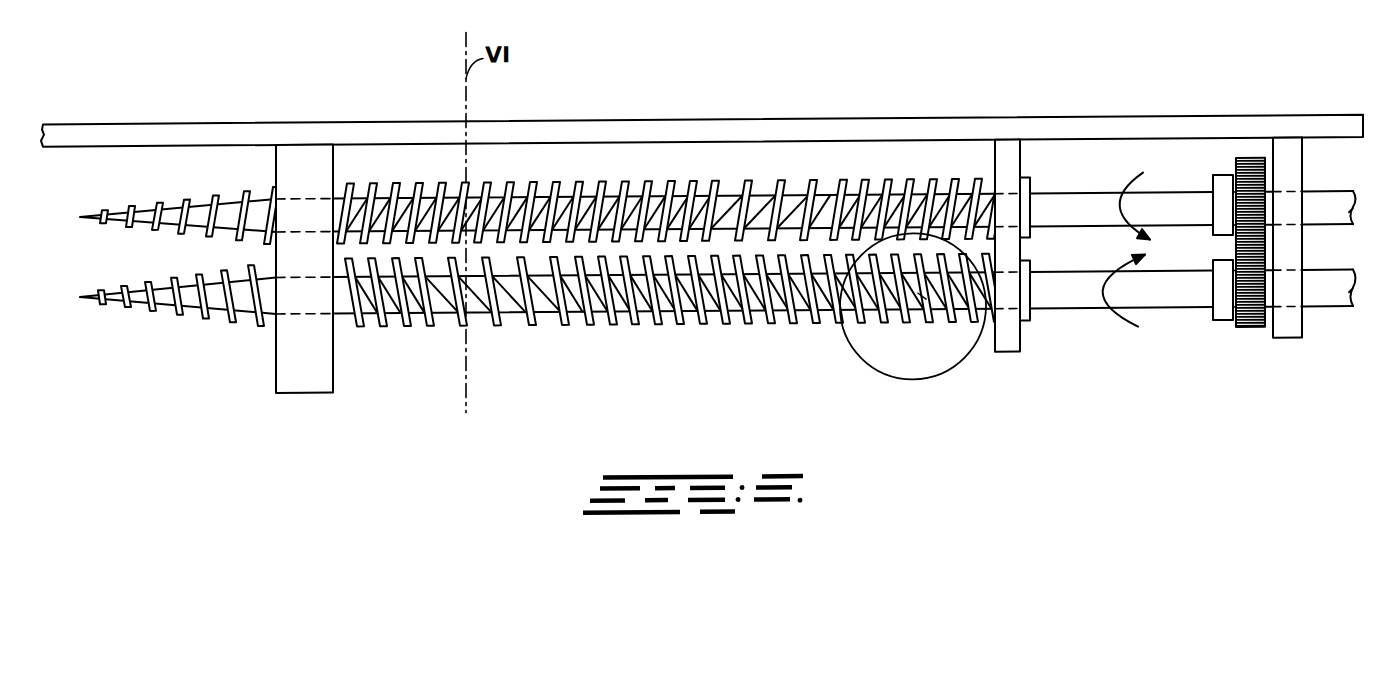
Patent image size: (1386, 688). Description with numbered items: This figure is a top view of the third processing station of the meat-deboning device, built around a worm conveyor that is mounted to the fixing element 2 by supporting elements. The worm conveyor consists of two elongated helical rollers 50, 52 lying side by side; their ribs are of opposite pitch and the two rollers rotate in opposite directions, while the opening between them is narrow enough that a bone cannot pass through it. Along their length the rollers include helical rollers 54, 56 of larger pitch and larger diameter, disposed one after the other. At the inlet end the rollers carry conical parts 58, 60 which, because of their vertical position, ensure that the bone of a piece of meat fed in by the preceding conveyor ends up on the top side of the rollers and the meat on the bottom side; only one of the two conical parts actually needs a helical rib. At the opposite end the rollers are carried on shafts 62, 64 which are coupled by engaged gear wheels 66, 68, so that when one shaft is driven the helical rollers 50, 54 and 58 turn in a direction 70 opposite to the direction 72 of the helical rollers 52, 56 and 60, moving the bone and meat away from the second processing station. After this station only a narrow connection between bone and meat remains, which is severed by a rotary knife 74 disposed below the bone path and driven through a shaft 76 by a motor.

The fixing element 2 is at (875, 134).
The helical roller 50 is at (547, 323).
The helical roller 52 is at (548, 158).
The helical roller with larger pitch and diameter 54 is at (517, 299).
The helical roller with larger pitch and diameter 56 is at (750, 205).
The conical part 58 is at (203, 302).
The conical part 60 is at (203, 202).
The shaft 62 is at (1325, 310).
The shaft 64 is at (1330, 210).
The gear wheel 66 is at (1222, 306).
The gear wheel 68 is at (1222, 184).
The direction of rotation 70 is at (1105, 328).
The direction of rotation 72 is at (1118, 186).
The rotary knife 74 is at (960, 377).
The shaft 76 is at (925, 307).